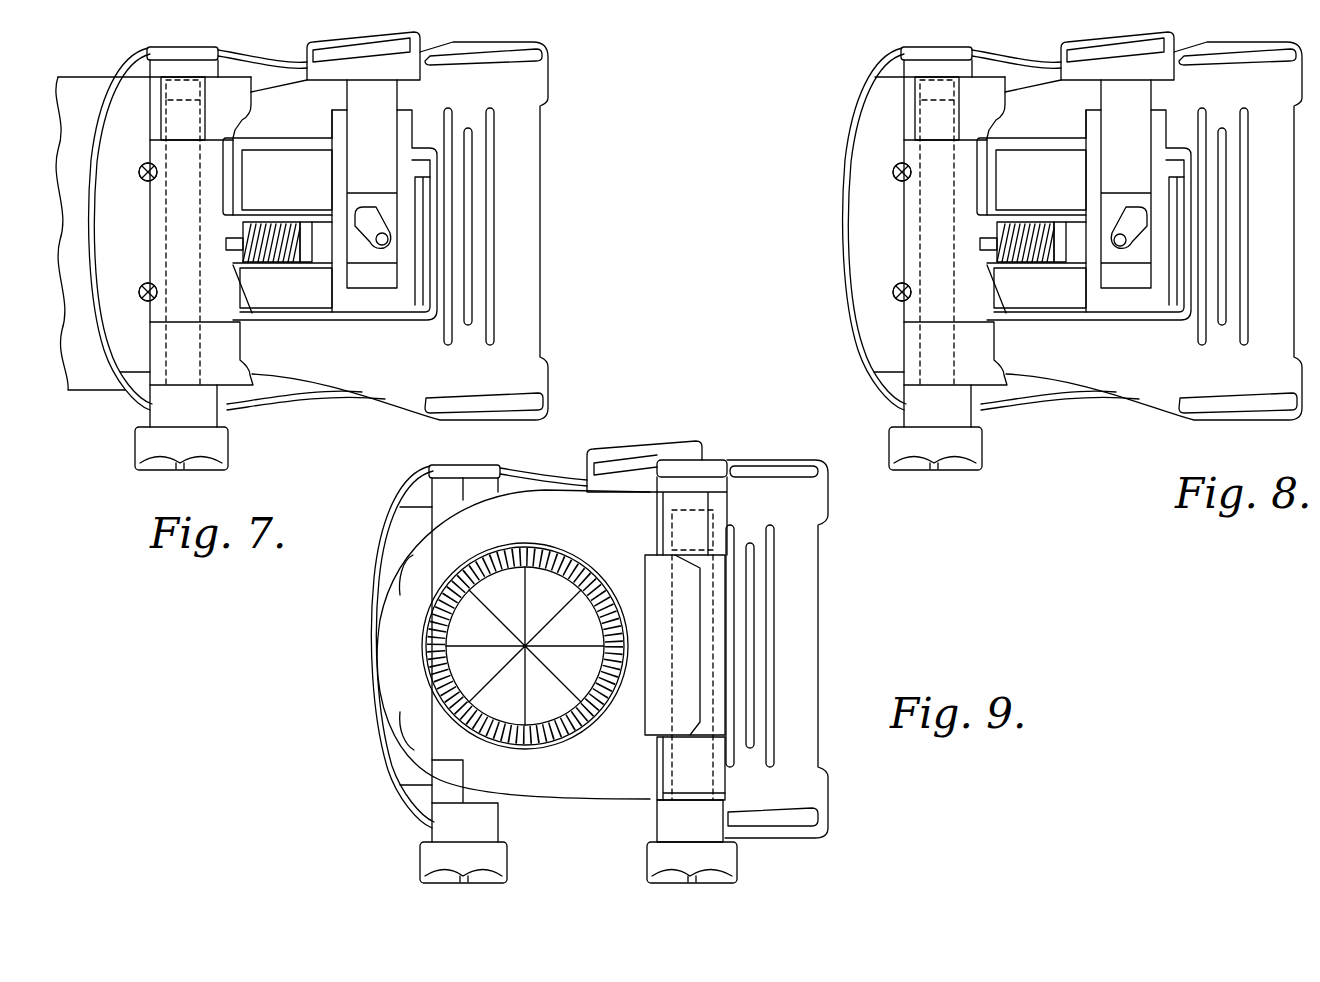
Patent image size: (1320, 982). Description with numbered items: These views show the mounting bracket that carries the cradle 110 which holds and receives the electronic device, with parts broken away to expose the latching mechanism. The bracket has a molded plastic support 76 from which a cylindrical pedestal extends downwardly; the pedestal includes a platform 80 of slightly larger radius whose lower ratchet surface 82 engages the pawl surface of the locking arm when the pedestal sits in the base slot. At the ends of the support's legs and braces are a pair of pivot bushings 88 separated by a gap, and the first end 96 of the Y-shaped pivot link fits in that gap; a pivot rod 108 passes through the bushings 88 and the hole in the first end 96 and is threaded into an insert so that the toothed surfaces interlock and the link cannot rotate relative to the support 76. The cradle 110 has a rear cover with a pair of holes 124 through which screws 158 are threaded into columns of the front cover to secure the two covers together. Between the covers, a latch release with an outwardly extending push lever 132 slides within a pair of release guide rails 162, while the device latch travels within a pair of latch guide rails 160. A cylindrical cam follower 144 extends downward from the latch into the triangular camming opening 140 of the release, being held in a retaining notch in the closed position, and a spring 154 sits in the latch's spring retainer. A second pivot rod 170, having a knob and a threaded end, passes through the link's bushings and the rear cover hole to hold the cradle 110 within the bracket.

In FIG. 9, the support 76 is at (400, 606).
In FIG. 9, the platform 80 is at (424, 644).
In FIG. 9, the ratchet surface 82 is at (420, 672).
In FIG. 9, the pivot bushings 88 is at (728, 500).
In FIG. 9, the first end 96 is at (722, 699).
In FIG. 9, the pivot rod 108 is at (738, 857).
In FIG. 9, the cradle 110 is at (816, 530).
In FIG. 7, the holes 124 is at (140, 174).
In FIG. 8, the holes 124 is at (855, 230).
In FIG. 7, the push lever 132 is at (420, 70).
In FIG. 8, the push lever 132 is at (1147, 65).
In FIG. 9, the push lever 132 is at (666, 450).
In FIG. 7, the camming opening 140 is at (372, 218).
In FIG. 8, the camming opening 140 is at (1129, 213).
In FIG. 7, the cam follower 144 is at (383, 247).
In FIG. 8, the cam follower 144 is at (1136, 271).
In FIG. 7, the spring 154 is at (290, 262).
In FIG. 8, the spring 154 is at (1017, 262).
In FIG. 7, the screws 158 is at (142, 166).
In FIG. 8, the screws 158 is at (855, 244).
In FIG. 7, the latch guide rails 160 is at (341, 329).
In FIG. 8, the latch guide rails 160 is at (1084, 231).
In FIG. 7, the release guide rails 162 is at (287, 220).
In FIG. 8, the release guide rails 162 is at (1040, 248).
In FIG. 7, the pivot rod 170 is at (142, 448).
In FIG. 8, the pivot rod 170 is at (962, 448).
In FIG. 9, the pivot rod 170 is at (505, 861).